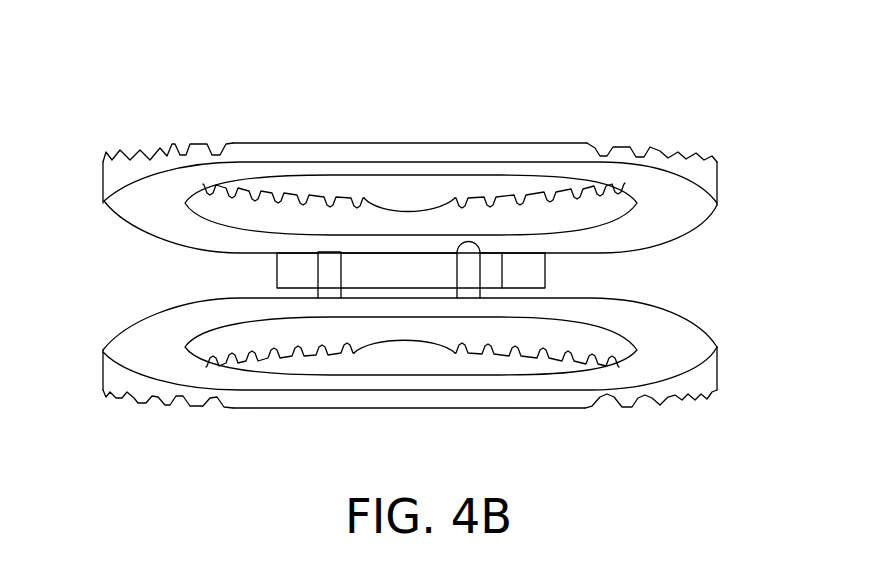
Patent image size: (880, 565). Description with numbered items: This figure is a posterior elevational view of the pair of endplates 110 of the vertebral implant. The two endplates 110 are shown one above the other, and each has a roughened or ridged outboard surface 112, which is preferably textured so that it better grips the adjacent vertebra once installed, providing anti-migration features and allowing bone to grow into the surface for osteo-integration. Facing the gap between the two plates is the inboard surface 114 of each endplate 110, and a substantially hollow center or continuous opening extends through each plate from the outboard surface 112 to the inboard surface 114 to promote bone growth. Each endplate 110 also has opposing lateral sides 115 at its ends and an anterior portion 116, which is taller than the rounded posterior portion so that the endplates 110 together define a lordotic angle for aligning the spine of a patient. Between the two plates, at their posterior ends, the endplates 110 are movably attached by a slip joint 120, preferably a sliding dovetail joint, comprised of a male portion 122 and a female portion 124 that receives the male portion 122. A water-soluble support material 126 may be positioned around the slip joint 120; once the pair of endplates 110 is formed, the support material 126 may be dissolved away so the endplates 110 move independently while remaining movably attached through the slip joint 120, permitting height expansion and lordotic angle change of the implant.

The endplates 110 is at (423, 243).
The outboard surface 112 is at (180, 145).
The inboard surface 114 is at (668, 212).
The lateral sides 115 is at (103, 188).
The anterior portions 116 is at (443, 148).
The slip joint 120 is at (430, 270).
The male portion 122 is at (323, 280).
The female portion 124 is at (340, 258).
The water-soluble support material 126 is at (324, 279).